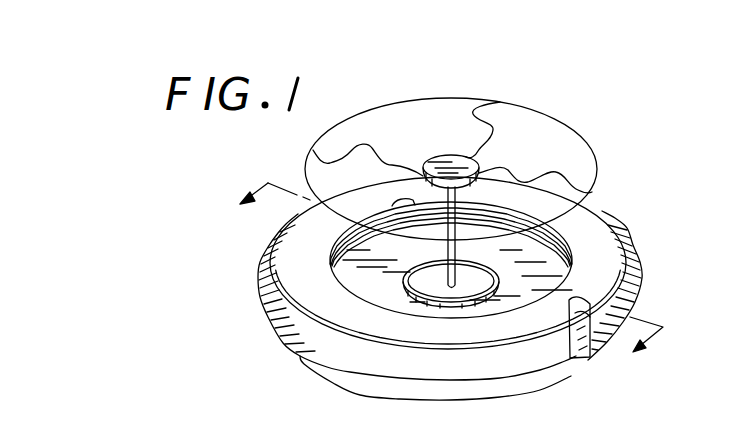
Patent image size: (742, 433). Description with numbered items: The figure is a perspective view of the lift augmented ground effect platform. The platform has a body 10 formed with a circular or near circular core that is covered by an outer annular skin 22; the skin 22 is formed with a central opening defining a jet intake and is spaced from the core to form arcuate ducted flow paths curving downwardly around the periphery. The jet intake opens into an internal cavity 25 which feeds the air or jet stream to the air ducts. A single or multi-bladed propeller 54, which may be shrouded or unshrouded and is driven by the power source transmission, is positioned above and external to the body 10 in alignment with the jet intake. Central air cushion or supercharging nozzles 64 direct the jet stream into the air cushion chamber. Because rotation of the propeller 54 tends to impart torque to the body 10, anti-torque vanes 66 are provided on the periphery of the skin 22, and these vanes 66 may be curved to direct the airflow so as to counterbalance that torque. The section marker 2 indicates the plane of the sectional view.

The body 10 is at (440, 239).
The outer annular skin 22 is at (272, 320).
The internal cavity 25 is at (536, 267).
The propeller 54 is at (548, 116).
The central air cushion nozzles 64 is at (403, 287).
The anti-torque vanes 66 is at (580, 362).
The section line for FIG. 2 is at (437, 288).